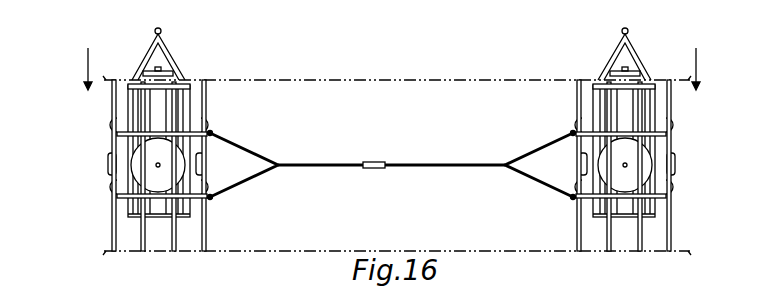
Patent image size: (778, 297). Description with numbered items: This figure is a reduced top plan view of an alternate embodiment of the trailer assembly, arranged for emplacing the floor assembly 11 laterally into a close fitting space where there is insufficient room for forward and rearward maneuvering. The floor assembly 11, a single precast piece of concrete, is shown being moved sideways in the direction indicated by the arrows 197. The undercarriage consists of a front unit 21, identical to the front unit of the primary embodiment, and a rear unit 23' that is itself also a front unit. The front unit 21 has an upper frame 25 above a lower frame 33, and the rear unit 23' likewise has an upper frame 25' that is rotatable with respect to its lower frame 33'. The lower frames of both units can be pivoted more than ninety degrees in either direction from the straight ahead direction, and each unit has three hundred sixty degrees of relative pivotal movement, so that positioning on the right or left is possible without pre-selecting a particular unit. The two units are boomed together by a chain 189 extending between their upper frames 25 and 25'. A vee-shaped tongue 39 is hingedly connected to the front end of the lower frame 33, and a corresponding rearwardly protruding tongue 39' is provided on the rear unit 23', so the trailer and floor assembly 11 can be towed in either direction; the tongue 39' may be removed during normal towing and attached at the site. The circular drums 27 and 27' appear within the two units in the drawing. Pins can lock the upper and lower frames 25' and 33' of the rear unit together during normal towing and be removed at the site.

The floor assembly 11 is at (392, 80).
The arrows 197 is at (88, 58).
The front unit 21 is at (655, 165).
The rear unit 23' is at (127, 165).
The upper frame 25 is at (546, 146).
The upper frame 25' is at (235, 146).
The roller drum 27 is at (666, 166).
The roller drum 27' is at (116, 166).
The lower frame 33 is at (588, 68).
The lower frame 33' is at (197, 69).
The tongue 39 is at (606, 54).
The tongue 39' is at (181, 54).
The chain 189 is at (383, 165).